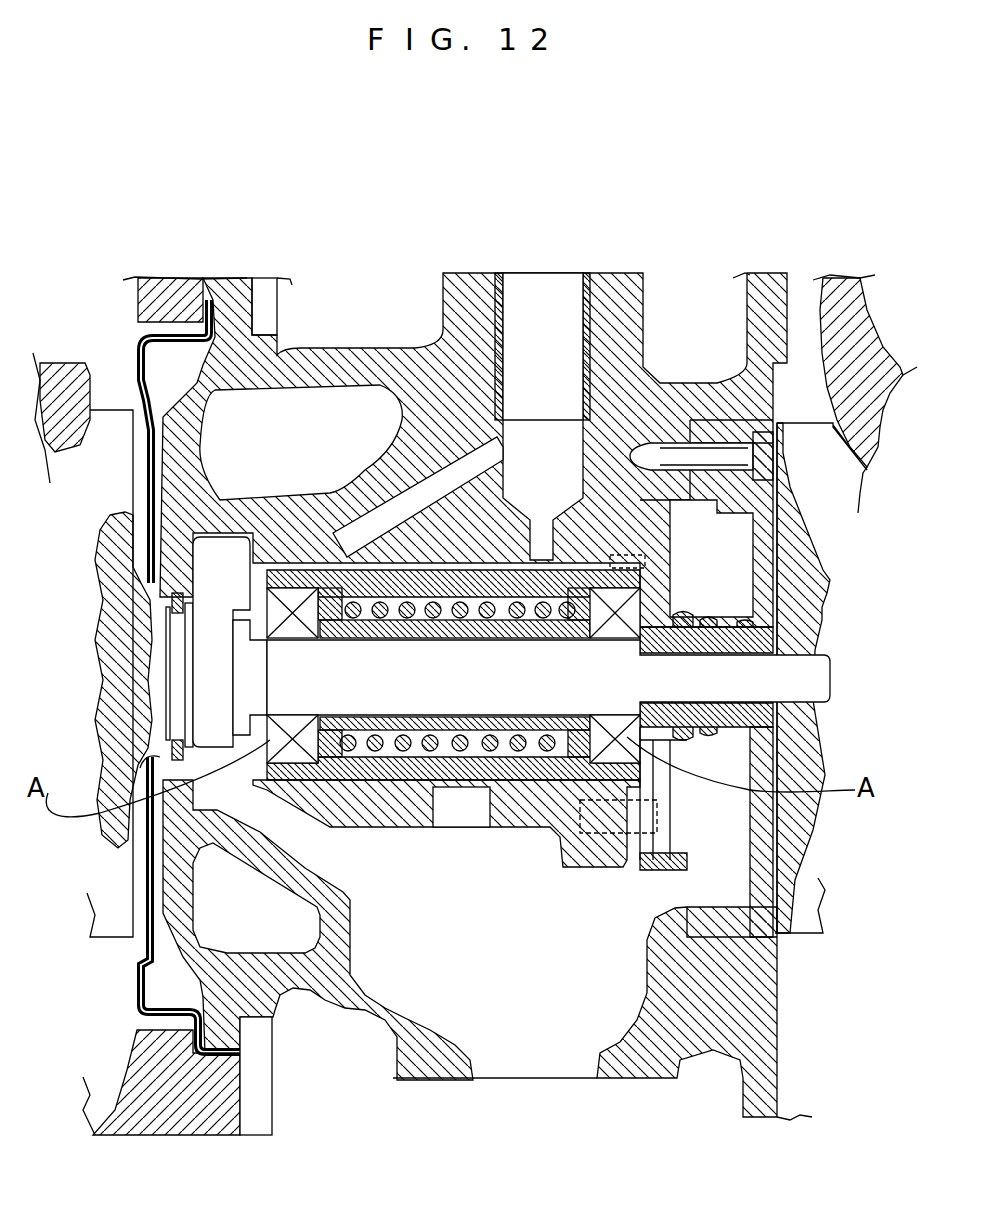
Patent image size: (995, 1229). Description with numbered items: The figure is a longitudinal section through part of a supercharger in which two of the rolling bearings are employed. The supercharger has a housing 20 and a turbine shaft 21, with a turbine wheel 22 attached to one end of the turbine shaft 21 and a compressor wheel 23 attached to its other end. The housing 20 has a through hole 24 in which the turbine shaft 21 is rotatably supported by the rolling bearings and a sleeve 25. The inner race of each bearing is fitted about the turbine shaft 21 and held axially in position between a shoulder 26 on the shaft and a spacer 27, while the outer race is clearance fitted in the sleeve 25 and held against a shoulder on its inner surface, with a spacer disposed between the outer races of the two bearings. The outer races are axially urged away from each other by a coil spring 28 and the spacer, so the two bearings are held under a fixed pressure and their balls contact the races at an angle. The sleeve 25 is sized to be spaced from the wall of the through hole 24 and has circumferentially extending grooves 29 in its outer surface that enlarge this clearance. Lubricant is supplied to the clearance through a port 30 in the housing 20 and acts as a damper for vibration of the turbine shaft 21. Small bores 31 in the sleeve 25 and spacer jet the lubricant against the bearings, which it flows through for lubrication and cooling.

The housing 20 is at (383, 343).
The turbine shaft 21 is at (407, 697).
The turbine wheel 22 is at (113, 613).
The compressor wheel 23 is at (820, 607).
The through hole 24 is at (570, 780).
The sleeve 25 is at (335, 568).
The shoulder 26 is at (280, 640).
The spacer 27 is at (480, 622).
The coil spring 28 is at (487, 733).
The circumferentially extending grooves 29 is at (353, 583).
The port 30 is at (558, 292).
The small bores 31 is at (340, 617).